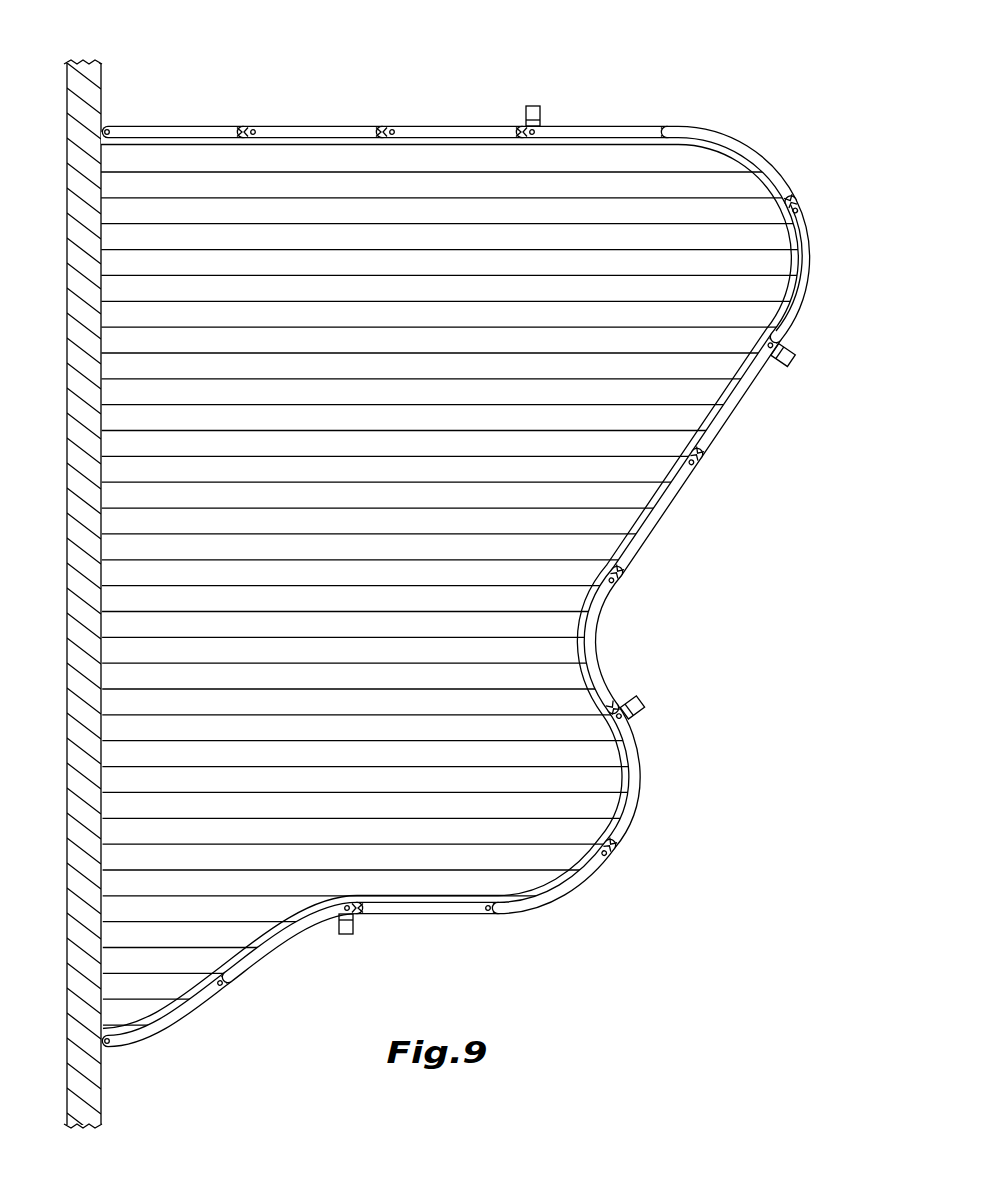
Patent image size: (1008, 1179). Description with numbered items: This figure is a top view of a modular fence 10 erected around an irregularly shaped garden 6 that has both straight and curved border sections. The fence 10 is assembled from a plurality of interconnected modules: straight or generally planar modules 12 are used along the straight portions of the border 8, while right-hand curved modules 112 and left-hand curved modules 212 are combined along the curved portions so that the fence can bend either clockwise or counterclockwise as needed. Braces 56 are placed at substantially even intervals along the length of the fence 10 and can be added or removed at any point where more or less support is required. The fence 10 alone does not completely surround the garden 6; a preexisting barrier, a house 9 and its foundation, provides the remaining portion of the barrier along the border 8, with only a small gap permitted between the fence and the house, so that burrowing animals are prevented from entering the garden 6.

The garden 6 is at (585, 444).
The border 8 is at (795, 260).
The house 9 is at (104, 100).
The fence 10 is at (496, 551).
The straight module 12 is at (181, 126).
The brace 56 is at (532, 105).
The curved module 112 is at (745, 150).
The curved module 212 is at (603, 625).